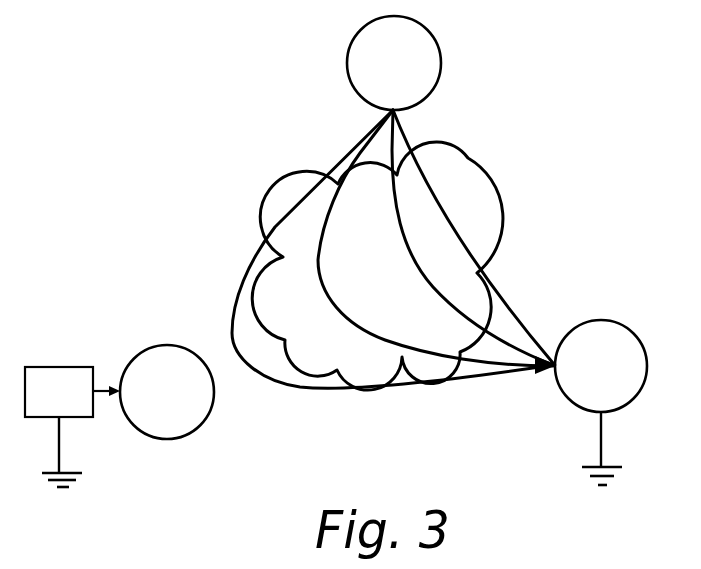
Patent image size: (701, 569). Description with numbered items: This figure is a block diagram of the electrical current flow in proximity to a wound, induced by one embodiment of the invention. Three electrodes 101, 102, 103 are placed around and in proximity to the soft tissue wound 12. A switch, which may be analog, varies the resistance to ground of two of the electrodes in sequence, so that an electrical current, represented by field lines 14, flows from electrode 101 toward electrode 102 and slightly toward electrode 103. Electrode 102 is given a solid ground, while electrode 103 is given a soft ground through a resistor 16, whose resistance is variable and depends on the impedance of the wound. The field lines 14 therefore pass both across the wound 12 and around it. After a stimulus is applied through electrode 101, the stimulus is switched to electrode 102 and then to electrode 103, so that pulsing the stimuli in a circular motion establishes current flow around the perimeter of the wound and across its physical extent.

The soft tissue wound 12 is at (359, 282).
The field lines 14 is at (326, 166).
The resistor 16 is at (77, 402).
The electrode 101 is at (367, 77).
The electrode 102 is at (573, 378).
The electrode 103 is at (139, 404).